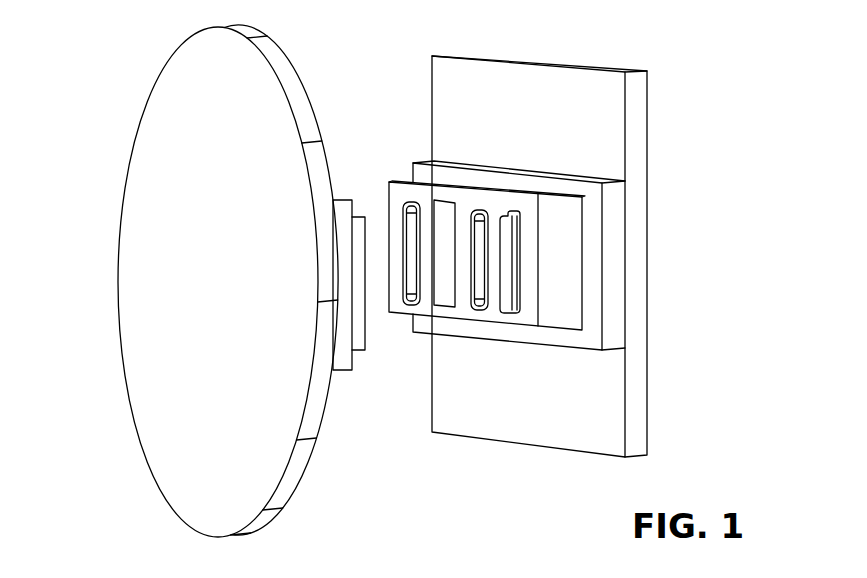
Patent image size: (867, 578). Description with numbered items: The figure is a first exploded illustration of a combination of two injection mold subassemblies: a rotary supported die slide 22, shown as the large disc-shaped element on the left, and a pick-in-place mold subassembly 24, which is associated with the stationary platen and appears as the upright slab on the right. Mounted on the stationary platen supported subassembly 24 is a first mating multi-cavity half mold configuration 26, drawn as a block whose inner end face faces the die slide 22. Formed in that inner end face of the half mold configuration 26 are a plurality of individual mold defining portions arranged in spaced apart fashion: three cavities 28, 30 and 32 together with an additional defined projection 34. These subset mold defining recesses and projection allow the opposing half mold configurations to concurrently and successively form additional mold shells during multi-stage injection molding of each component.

The rotary supported die slide 22 is at (131, 113).
The pick-in-place mold subassembly 24 is at (683, 81).
The first mating multi-cavity half mold configuration 26 is at (389, 200).
The cavity 28 is at (401, 303).
The cavity 30 is at (445, 307).
The cavity 32 is at (480, 310).
The projection 34 is at (510, 313).